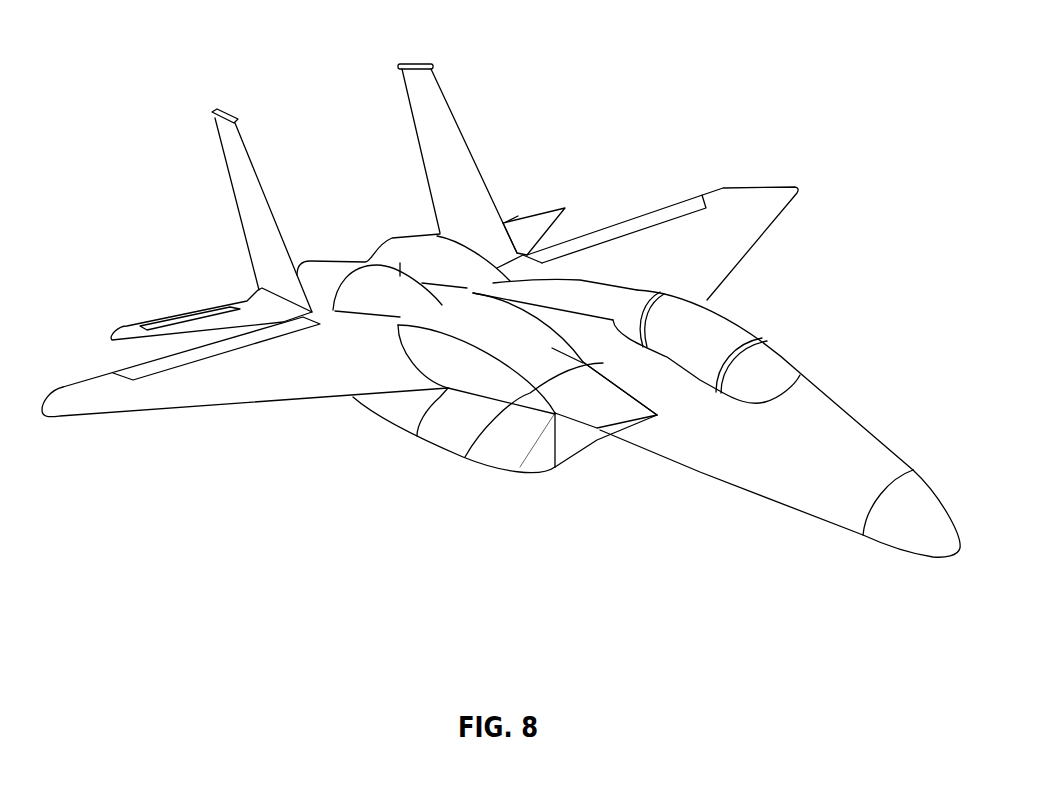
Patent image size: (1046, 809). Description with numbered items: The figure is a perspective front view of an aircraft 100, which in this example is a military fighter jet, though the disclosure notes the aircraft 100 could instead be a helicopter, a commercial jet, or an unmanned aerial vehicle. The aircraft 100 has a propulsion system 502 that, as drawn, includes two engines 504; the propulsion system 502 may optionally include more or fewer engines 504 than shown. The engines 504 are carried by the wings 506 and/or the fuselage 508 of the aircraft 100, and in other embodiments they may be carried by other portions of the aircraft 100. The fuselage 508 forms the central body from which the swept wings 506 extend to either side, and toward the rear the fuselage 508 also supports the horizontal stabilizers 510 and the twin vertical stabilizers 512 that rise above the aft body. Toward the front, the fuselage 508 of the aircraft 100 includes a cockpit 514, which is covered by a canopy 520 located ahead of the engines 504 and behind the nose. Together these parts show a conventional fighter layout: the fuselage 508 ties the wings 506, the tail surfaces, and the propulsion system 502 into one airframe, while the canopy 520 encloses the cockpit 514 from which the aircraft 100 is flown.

The aircraft 100 is at (167, 70).
The propulsion system 502 is at (539, 535).
The engines 504 is at (803, 367).
The wings 506 is at (260, 407).
The fuselage 508 is at (465, 458).
The horizontal stabilizers 510 is at (208, 303).
The vertical stabilizers 512 is at (255, 175).
The cockpit 514 is at (726, 322).
The canopy 520 is at (708, 352).